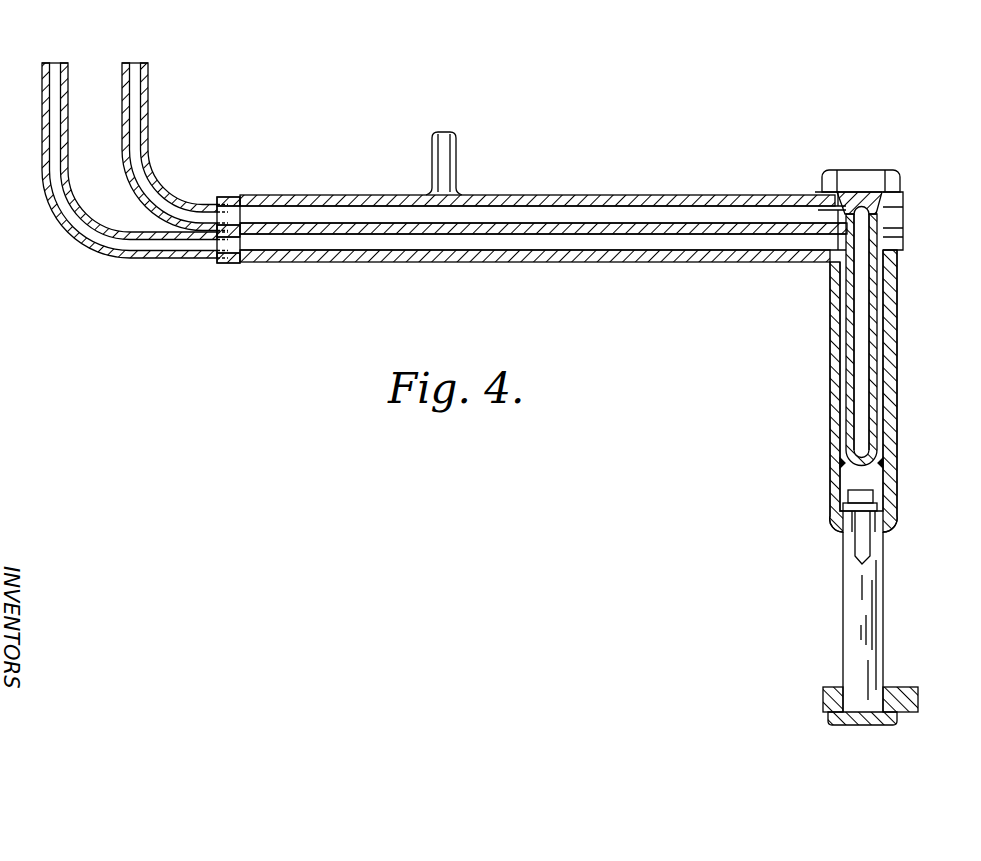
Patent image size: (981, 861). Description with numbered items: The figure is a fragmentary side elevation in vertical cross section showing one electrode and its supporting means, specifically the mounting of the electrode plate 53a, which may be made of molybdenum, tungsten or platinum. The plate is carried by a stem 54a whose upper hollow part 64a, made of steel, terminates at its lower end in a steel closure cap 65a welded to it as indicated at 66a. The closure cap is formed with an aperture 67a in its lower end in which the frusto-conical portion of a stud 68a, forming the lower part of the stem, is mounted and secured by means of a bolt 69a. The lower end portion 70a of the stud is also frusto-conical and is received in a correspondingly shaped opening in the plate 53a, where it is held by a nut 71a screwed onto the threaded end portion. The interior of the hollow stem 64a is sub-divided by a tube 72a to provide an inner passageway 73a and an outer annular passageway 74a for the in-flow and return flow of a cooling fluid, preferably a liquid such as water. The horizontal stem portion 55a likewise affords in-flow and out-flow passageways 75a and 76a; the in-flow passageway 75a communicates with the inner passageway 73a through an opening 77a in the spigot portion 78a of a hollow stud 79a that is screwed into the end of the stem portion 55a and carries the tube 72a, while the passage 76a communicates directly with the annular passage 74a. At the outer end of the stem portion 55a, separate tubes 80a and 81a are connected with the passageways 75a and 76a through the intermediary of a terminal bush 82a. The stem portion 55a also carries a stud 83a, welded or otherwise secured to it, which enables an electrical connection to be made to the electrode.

The electrode plate 53a is at (917, 690).
The stem 54a is at (905, 442).
The horizontal stem portion 55a is at (592, 188).
The upper hollow part 64a is at (830, 385).
The closure cap 65a is at (836, 496).
The weld 66a is at (838, 466).
The aperture 67a is at (877, 517).
The stud 68a is at (880, 598).
The bolt 69a is at (882, 500).
The lower end portion 70a is at (853, 660).
The nut 71a is at (895, 722).
The tube 72a is at (872, 284).
The inner passageway 73a is at (862, 313).
The outer annular passageway 74a is at (884, 346).
The in-flow passageway 75a is at (688, 211).
The out-flow passageway 76a is at (635, 241).
The opening 77a is at (890, 198).
The spigot portion 78a is at (872, 228).
The hollow stud 79a is at (860, 172).
The tube 80a is at (148, 95).
The tube 81a is at (42, 128).
The terminal bush 82a is at (237, 198).
The stud 83a is at (458, 164).